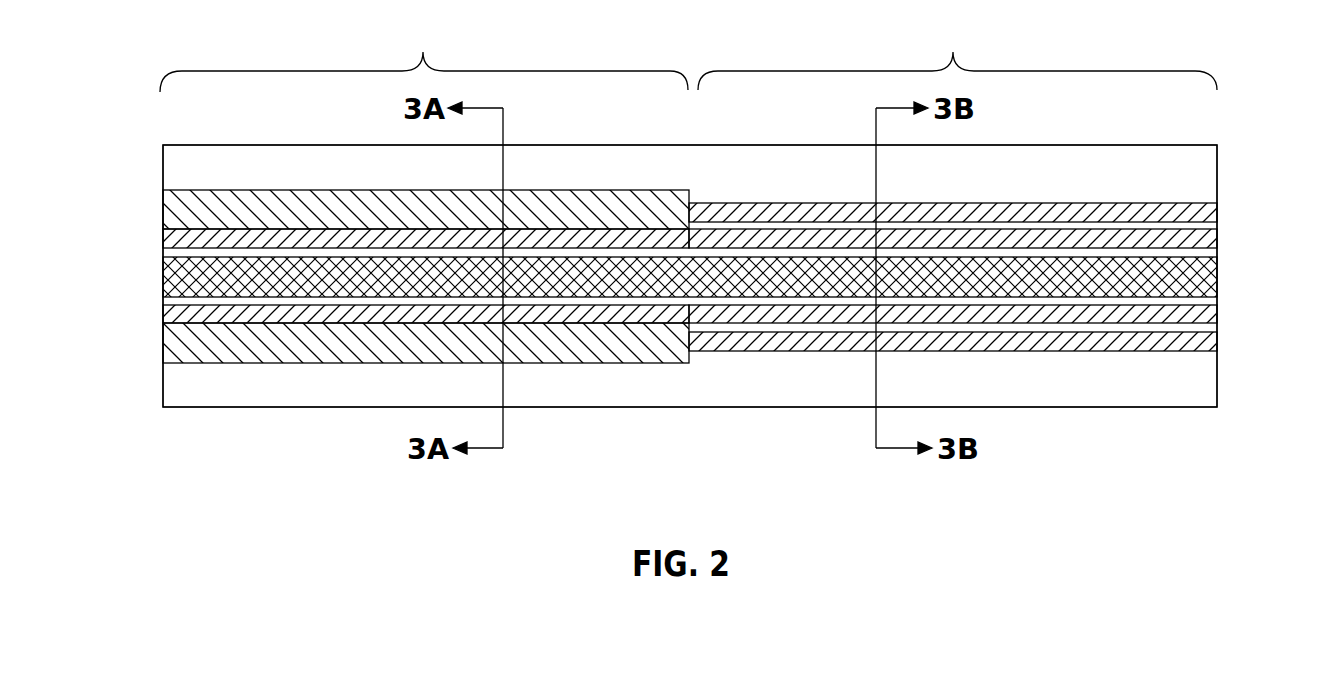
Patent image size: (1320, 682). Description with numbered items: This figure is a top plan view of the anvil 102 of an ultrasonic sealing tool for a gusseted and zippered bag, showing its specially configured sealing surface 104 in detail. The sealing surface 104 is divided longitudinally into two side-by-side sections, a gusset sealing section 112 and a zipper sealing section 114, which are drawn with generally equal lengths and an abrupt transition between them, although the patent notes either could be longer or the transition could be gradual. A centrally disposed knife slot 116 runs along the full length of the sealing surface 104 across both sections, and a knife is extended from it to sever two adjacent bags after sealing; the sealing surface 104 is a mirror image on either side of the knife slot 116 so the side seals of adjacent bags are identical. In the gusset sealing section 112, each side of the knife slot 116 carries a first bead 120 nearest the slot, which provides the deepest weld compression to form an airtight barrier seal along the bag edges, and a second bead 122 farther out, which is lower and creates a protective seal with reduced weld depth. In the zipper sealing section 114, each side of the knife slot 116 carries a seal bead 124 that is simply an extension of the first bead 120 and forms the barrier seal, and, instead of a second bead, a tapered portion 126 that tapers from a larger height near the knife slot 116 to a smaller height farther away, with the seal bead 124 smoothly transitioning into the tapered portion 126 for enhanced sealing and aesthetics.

The anvil 102 is at (316, 414).
The sealing surface 104 is at (1090, 397).
The gusset sealing section 112 is at (957, 52).
The zipper sealing section 114 is at (424, 53).
The knife slot 116 is at (1190, 277).
The first bead 120 is at (1205, 238).
The second bead 122 is at (1205, 212).
The seal bead 124 is at (170, 240).
The tapered portion 126 is at (175, 212).